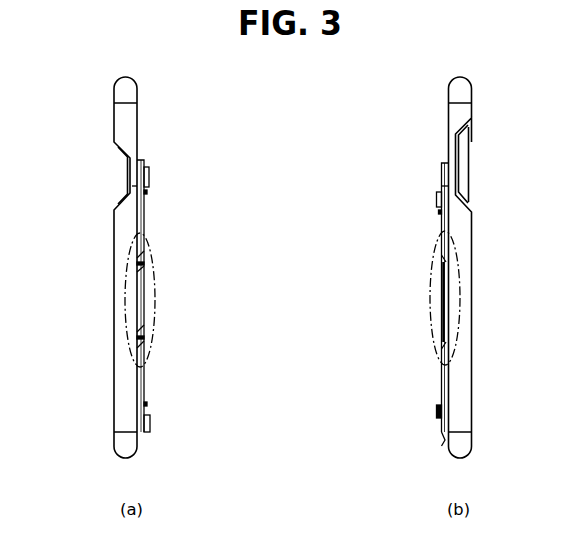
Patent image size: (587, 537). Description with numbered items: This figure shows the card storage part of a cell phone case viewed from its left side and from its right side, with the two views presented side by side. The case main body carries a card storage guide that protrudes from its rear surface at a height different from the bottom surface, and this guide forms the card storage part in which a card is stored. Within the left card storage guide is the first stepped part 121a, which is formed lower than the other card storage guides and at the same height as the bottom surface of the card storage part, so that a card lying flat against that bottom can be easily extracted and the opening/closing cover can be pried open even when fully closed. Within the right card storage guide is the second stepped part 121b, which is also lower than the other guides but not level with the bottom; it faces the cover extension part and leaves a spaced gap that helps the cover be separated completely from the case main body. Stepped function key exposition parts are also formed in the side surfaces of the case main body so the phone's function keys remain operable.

The first stepped part 121a is at (156, 292).
The second stepped part 121b is at (430, 298).